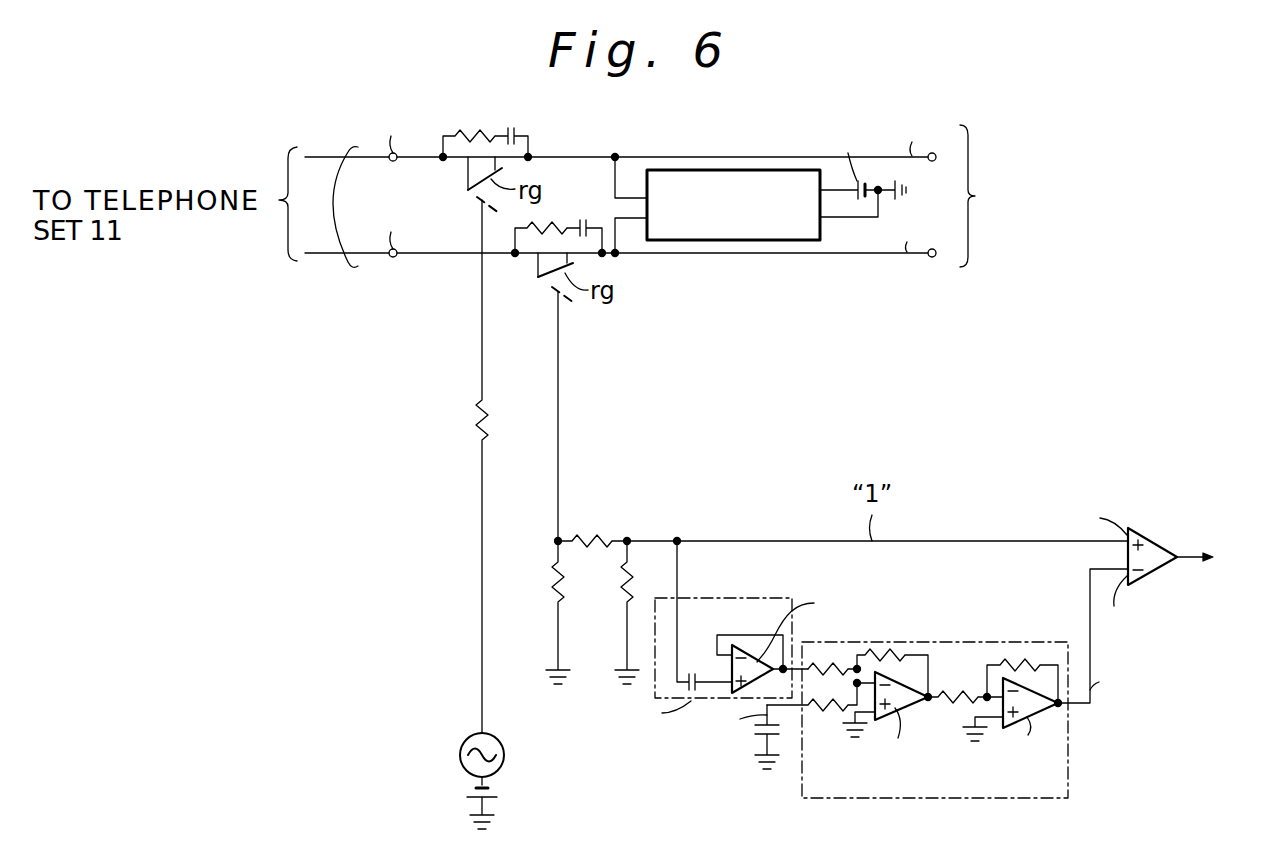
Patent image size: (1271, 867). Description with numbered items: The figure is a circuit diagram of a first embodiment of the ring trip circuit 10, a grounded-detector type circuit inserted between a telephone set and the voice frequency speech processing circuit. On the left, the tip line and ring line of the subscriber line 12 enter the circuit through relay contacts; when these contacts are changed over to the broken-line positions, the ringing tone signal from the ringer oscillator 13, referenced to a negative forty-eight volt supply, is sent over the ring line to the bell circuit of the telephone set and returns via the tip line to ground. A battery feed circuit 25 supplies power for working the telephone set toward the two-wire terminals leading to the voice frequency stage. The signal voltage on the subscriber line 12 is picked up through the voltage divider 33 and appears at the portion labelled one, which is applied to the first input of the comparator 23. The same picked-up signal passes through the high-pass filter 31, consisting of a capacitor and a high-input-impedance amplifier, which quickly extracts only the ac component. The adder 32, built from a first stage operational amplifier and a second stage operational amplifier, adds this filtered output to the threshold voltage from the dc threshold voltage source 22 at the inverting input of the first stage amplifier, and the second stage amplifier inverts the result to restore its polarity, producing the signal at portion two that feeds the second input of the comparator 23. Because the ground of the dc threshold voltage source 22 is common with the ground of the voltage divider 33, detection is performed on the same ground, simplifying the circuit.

The ring trip circuit 10 is at (759, 375).
The subscriber line 12 is at (350, 265).
The ringer oscillator 13 is at (462, 738).
The dc threshold voltage source 22 is at (757, 733).
The comparator 23 is at (1161, 571).
The battery feed circuit 25 is at (640, 207).
The high-pass filter 31 is at (728, 597).
The adder 32 is at (937, 640).
The voltage divider 33 is at (611, 528).